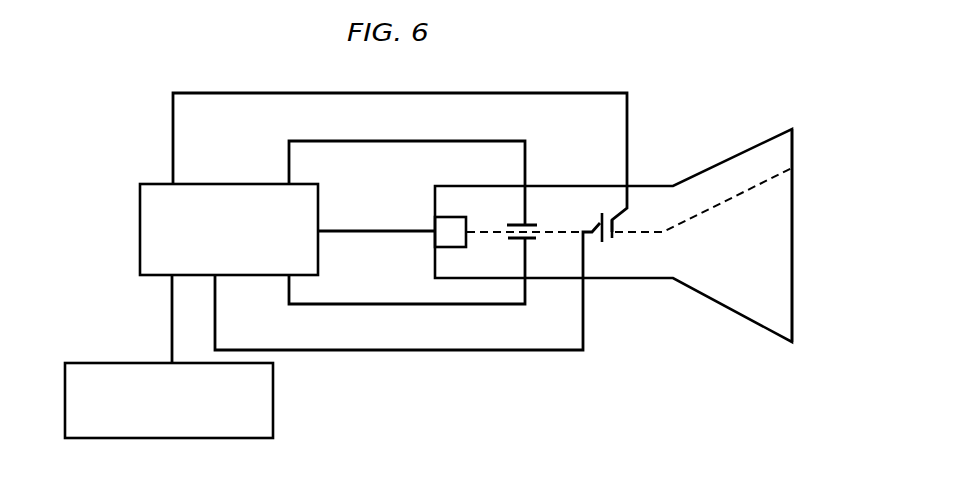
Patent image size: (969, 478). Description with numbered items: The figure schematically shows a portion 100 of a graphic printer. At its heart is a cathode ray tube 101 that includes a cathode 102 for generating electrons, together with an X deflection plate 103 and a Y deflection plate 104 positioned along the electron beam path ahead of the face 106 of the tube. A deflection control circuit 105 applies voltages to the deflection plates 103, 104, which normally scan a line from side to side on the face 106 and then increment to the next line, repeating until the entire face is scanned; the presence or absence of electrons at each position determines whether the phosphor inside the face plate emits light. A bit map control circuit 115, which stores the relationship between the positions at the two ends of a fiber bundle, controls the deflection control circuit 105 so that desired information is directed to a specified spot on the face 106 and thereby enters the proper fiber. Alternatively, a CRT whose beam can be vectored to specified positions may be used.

The portion of a printer 100 is at (422, 382).
The cathode ray tube 101 is at (601, 186).
The cathode 102 is at (435, 217).
The X deflection plate 103 is at (602, 242).
The Y deflection plate 104 is at (537, 240).
The deflection control circuit 105 is at (141, 185).
The face 106 is at (790, 330).
The bit map control circuit 115 is at (114, 363).